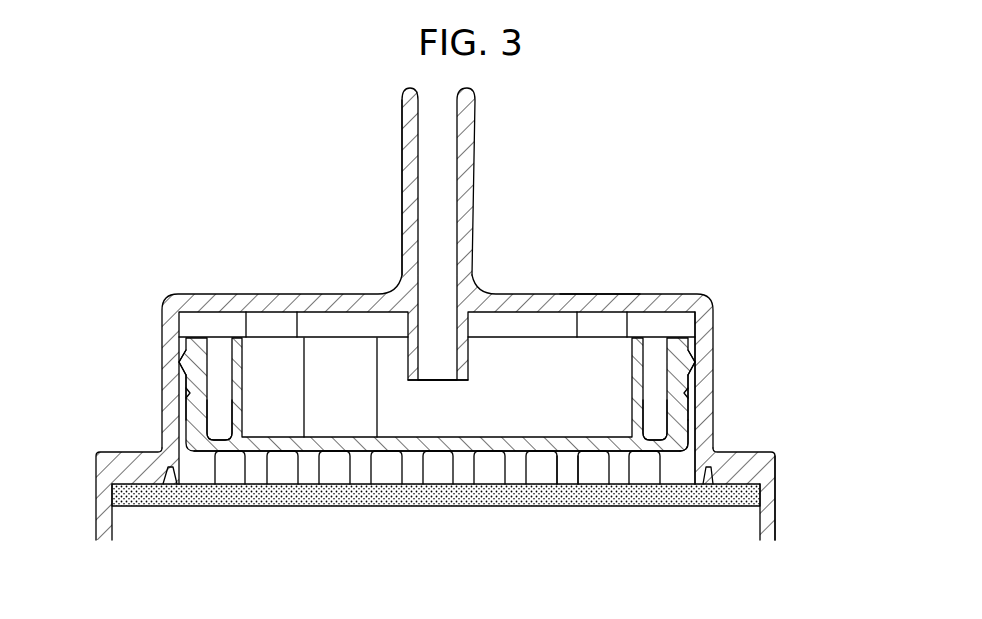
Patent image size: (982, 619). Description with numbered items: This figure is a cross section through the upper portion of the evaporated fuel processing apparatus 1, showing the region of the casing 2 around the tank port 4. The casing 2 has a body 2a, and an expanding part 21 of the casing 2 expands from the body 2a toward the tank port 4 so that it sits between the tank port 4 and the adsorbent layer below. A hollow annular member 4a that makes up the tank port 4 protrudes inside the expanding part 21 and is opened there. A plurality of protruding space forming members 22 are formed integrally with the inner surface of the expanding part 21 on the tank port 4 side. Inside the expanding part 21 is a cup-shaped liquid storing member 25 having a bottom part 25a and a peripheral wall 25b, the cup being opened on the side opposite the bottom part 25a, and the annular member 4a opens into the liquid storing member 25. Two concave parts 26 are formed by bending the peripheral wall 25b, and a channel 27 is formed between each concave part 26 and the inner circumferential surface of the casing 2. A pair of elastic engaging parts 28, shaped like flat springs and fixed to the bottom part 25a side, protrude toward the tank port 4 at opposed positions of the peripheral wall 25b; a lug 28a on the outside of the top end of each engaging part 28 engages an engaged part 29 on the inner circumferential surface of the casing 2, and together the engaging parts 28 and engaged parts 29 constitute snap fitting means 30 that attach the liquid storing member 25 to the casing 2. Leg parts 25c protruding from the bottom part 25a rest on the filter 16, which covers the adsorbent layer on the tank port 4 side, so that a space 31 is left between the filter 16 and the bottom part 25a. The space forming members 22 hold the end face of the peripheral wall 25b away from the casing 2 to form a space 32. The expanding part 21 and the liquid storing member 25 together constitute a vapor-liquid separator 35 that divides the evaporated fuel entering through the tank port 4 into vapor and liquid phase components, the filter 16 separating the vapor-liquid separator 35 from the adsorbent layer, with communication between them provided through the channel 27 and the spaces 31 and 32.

The evaporated fuel processing apparatus 1 is at (782, 467).
The casing 2 is at (698, 282).
The body 2a is at (775, 517).
The tank port 4 is at (470, 147).
The hollow annular member 4a is at (463, 360).
The filter 16 is at (225, 495).
The expanding part 21 is at (703, 308).
The space forming members 22 is at (268, 330).
The liquid storing member 25 is at (495, 330).
The bottom part 25a is at (438, 452).
The peripheral wall 25b is at (690, 422).
The leg parts 25c is at (327, 463).
The concave parts 26 is at (333, 358).
The channel 27 is at (357, 418).
The elastic engaging parts 28 is at (197, 410).
The lug 28a is at (188, 358).
The engaged parts 29 is at (218, 383).
The snap fitting means 30 is at (188, 393).
The space 31 is at (565, 458).
The space 32 is at (532, 327).
The vapor-liquid separator 35 is at (598, 283).